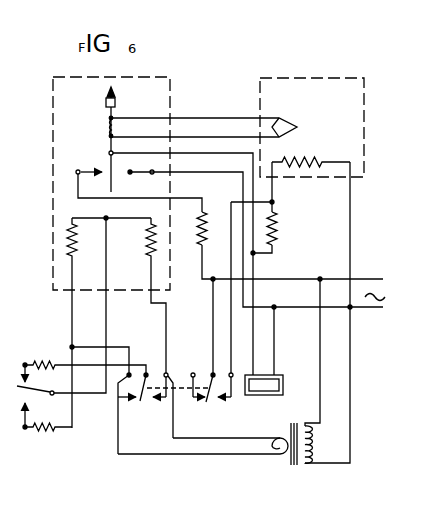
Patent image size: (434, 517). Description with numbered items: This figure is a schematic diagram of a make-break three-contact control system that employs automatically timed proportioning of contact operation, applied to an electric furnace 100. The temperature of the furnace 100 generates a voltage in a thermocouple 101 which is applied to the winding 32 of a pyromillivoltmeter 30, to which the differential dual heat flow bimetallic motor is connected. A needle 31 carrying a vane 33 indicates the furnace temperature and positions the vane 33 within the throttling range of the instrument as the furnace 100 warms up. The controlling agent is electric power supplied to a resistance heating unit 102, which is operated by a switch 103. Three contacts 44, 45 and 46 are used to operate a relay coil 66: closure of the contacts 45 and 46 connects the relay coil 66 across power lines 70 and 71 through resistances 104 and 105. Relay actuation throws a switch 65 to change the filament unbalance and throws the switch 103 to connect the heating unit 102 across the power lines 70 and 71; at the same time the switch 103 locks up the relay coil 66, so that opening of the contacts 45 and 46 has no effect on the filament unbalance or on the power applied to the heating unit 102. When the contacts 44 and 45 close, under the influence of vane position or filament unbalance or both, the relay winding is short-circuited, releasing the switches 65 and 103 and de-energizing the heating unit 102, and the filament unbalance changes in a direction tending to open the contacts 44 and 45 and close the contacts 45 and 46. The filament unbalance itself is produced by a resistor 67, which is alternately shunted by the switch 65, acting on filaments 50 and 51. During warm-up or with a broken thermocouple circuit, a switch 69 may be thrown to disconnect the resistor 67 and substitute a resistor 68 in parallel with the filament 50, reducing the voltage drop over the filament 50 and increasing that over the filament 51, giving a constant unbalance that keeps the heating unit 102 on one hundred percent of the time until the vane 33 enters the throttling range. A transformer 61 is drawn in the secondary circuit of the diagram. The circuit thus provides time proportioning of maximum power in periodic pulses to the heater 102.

The pyromillivoltmeter 30 is at (170, 88).
The electric furnace 100 is at (364, 86).
The needle 31 is at (107, 92).
The winding 32 is at (108, 120).
The vane 33 is at (116, 102).
The contact 44 is at (130, 174).
The contact 45 is at (109, 153).
The contact 46 is at (90, 170).
The filament 50 is at (68, 240).
The filament 51 is at (149, 246).
The transformer 61 is at (302, 466).
The relay operated switch 65 is at (143, 398).
The relay coil 66 is at (253, 396).
The resistor 67 is at (60, 360).
The resistor 68 is at (50, 429).
The switch 69 is at (31, 394).
The power line 70 is at (360, 279).
The power line 71 is at (368, 309).
The thermocouple 101 is at (278, 121).
The resistance heating unit 102 is at (303, 160).
The relay operated switch 103 is at (208, 403).
The resistance 104 is at (206, 212).
The resistance 105 is at (280, 232).